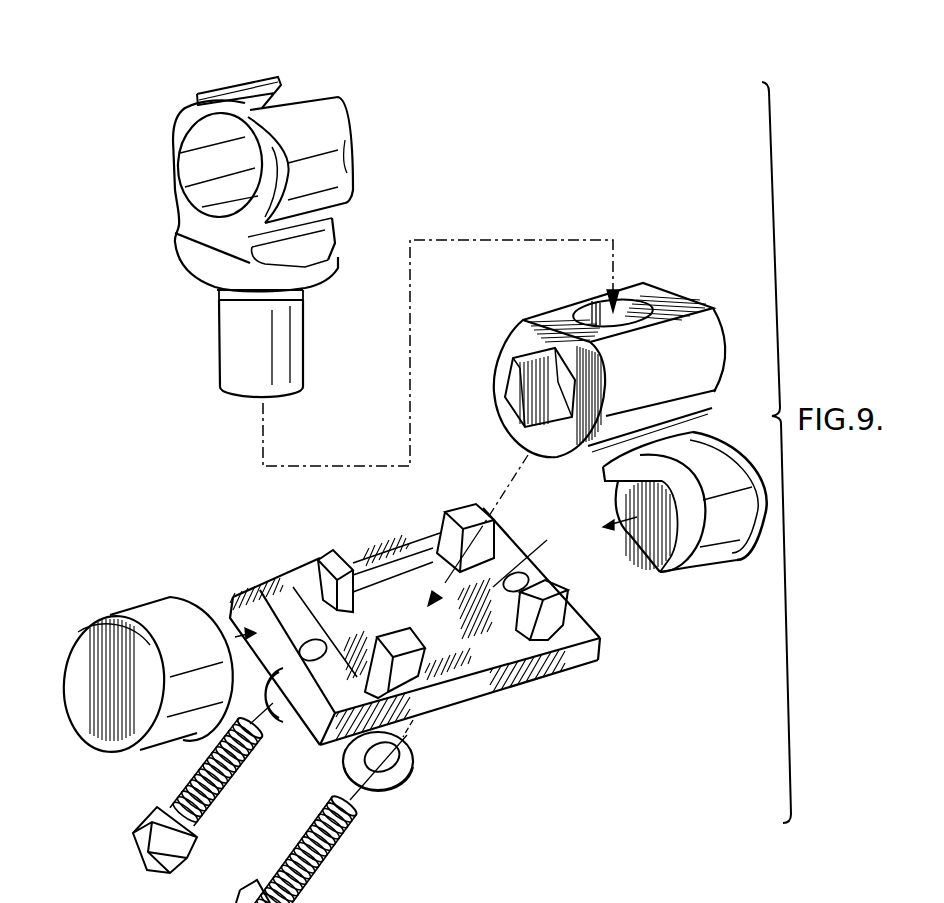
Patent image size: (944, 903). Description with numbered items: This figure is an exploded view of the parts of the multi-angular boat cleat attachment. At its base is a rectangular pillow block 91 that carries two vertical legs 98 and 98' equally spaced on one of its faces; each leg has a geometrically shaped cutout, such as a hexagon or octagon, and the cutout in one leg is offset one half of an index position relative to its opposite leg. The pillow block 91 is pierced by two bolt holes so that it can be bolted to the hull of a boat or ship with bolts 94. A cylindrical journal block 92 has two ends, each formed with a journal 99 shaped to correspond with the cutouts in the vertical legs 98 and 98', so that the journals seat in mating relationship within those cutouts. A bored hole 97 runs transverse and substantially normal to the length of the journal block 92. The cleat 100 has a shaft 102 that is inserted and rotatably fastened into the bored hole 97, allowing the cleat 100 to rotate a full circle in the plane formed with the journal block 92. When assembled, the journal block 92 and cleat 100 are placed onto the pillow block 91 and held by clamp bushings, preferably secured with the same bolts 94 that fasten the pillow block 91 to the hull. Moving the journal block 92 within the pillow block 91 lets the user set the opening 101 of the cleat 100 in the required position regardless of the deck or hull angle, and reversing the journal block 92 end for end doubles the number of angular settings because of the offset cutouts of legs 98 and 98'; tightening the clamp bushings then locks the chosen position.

The pillow block 91 is at (505, 690).
The cylindrical journal block 92 is at (705, 393).
The bolts 94 is at (133, 838).
The bored hole 97 is at (634, 284).
The vertical leg 98 is at (309, 560).
The vertical leg 98' is at (442, 530).
The journal 99 is at (513, 381).
The cleat 100 is at (177, 237).
The opening 101 is at (208, 94).
The shaft 102 is at (218, 352).